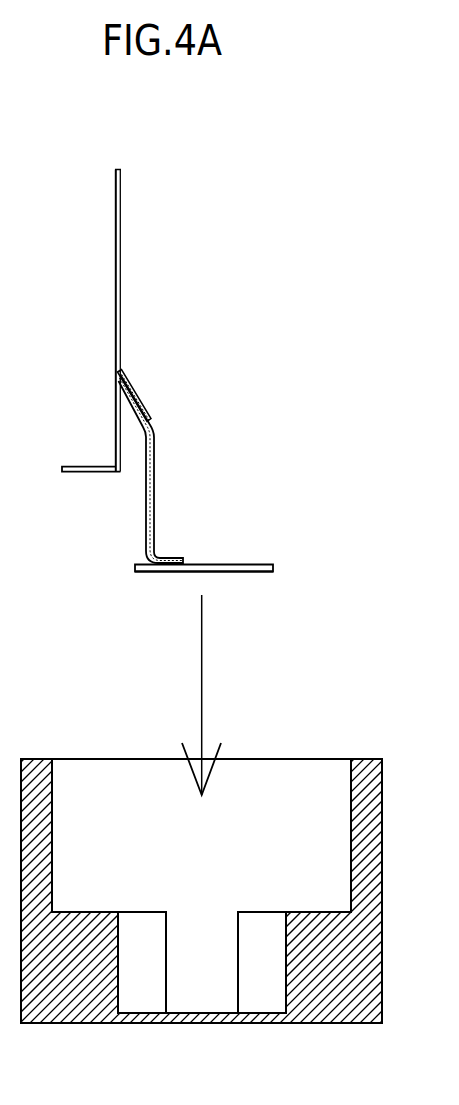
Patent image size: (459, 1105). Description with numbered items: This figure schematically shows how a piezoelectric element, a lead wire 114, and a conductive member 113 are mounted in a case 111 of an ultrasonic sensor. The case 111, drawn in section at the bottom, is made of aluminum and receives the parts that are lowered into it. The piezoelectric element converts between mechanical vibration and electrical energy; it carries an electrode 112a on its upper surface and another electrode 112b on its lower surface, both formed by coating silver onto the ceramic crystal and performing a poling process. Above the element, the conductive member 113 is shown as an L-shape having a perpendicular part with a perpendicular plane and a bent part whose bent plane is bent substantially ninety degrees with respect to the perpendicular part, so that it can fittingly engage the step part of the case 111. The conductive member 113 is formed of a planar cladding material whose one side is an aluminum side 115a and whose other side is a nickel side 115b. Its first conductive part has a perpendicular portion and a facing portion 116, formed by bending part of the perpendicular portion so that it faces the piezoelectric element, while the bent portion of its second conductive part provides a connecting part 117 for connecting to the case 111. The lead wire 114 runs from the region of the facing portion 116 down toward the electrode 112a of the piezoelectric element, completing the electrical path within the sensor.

The case 111 is at (382, 912).
The electrode 112a is at (250, 564).
The electrode 112b is at (250, 572).
The conductive member 113 is at (126, 182).
The lead wire 114 is at (156, 462).
The aluminum side 115a is at (121, 272).
The nickel side 115b is at (115, 260).
The facing portion 116 is at (131, 410).
The connecting part 117 is at (97, 472).